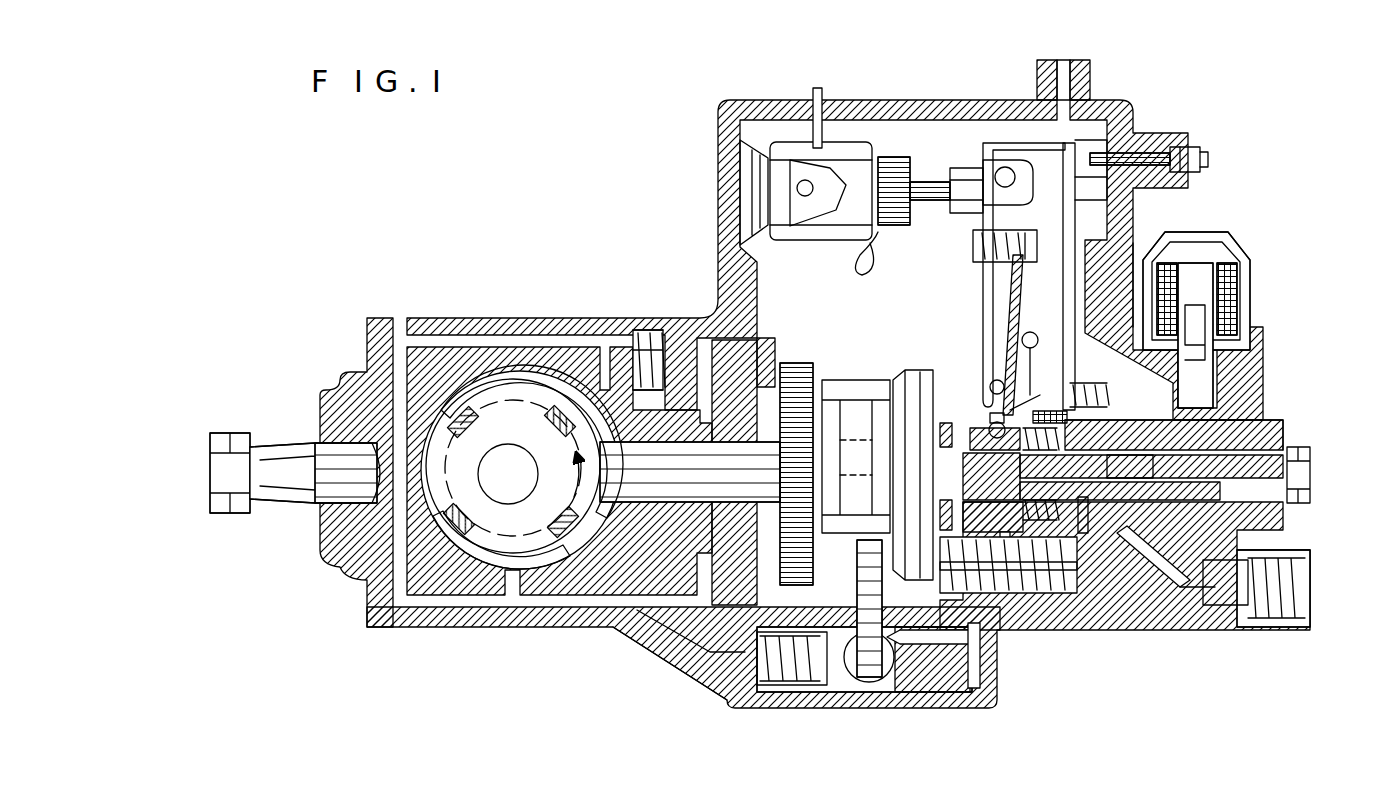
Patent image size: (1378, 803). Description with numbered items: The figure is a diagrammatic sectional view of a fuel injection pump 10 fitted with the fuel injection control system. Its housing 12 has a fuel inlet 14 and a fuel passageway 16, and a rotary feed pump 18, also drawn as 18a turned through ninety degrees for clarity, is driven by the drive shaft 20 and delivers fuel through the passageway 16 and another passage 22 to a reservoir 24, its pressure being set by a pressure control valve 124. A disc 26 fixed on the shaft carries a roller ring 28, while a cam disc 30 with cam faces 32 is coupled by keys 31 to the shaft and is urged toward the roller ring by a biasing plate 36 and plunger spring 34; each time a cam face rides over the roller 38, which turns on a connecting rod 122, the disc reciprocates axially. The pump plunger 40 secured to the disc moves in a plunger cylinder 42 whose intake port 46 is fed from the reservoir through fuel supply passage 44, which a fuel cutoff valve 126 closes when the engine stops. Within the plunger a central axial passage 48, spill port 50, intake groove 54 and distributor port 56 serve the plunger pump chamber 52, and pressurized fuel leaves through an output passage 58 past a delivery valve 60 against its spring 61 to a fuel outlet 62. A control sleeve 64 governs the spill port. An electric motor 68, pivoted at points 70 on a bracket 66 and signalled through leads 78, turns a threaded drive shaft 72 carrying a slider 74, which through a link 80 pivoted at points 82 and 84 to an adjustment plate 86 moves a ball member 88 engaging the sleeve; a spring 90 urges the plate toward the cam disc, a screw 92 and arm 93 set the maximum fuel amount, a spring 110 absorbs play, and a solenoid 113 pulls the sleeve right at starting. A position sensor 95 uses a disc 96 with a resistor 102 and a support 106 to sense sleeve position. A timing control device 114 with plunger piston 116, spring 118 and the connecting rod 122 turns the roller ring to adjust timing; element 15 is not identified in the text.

The fuel injection pump 10 is at (613, 146).
The housing 12 is at (718, 275).
The fuel inlet 14 is at (397, 318).
The spring 15 is at (1075, 393).
The fuel passageway 16 is at (400, 588).
The rotary feed pump 18 is at (732, 548).
The rotary feed pump (rotated view) 18a is at (500, 545).
The drive shaft 20 is at (648, 563).
The passage 22 is at (485, 340).
The reservoir 24 is at (777, 298).
The disc 26 is at (705, 645).
The roller ring 28 is at (805, 363).
The cam disc 30 is at (950, 694).
The keys 31 is at (855, 410).
The cam faces 32 is at (912, 646).
The plunger spring 34 is at (1083, 534).
The biasing plate 36 is at (975, 646).
The roller 38 is at (790, 664).
The pump plunger 40 is at (1287, 535).
The plunger cylinder 42 is at (1285, 427).
The fuel supply passage 44 is at (1235, 348).
The intake port 46 is at (1283, 458).
The central axial passage 48 is at (1125, 566).
The spill port 50 is at (1040, 524).
The plunger pump chamber 52 is at (1250, 497).
The intake groove 54 is at (1313, 471).
The distributor port 56 is at (1130, 606).
The output passages 58 is at (1160, 595).
The delivery valve 60 is at (1270, 604).
The spring 61 is at (1300, 632).
The fuel outlet 62 is at (1312, 597).
The control sleeve 64 is at (1005, 563).
The bracket 66 is at (758, 202).
The electric motor 68 is at (785, 150).
The pivot point 70 is at (797, 188).
The threaded drive shaft 72 is at (963, 168).
The slider 74 is at (1003, 160).
The leads 78 is at (815, 92).
The link 80 is at (983, 292).
The pivot point 82 is at (1080, 122).
The pivot point 84 is at (1000, 392).
The adjustment plate 86 is at (1020, 315).
The ball member 88 is at (990, 427).
The spring 90 is at (1125, 262).
The screw 92 is at (1202, 159).
The arm 93 is at (1135, 202).
The position sensor 95 is at (900, 150).
The disc 96 is at (893, 157).
The resistor 102 is at (925, 182).
The support 106 is at (866, 256).
The spring 110 is at (1092, 616).
The solenoid 113 is at (1215, 390).
The fuel injection timing control device 114 is at (752, 664).
The plunger piston 116 is at (885, 662).
The spring 118 is at (705, 660).
The connecting rod 122 is at (868, 682).
The pressure control valve 124 is at (645, 330).
The fuel cutoff valve 126 is at (1250, 272).